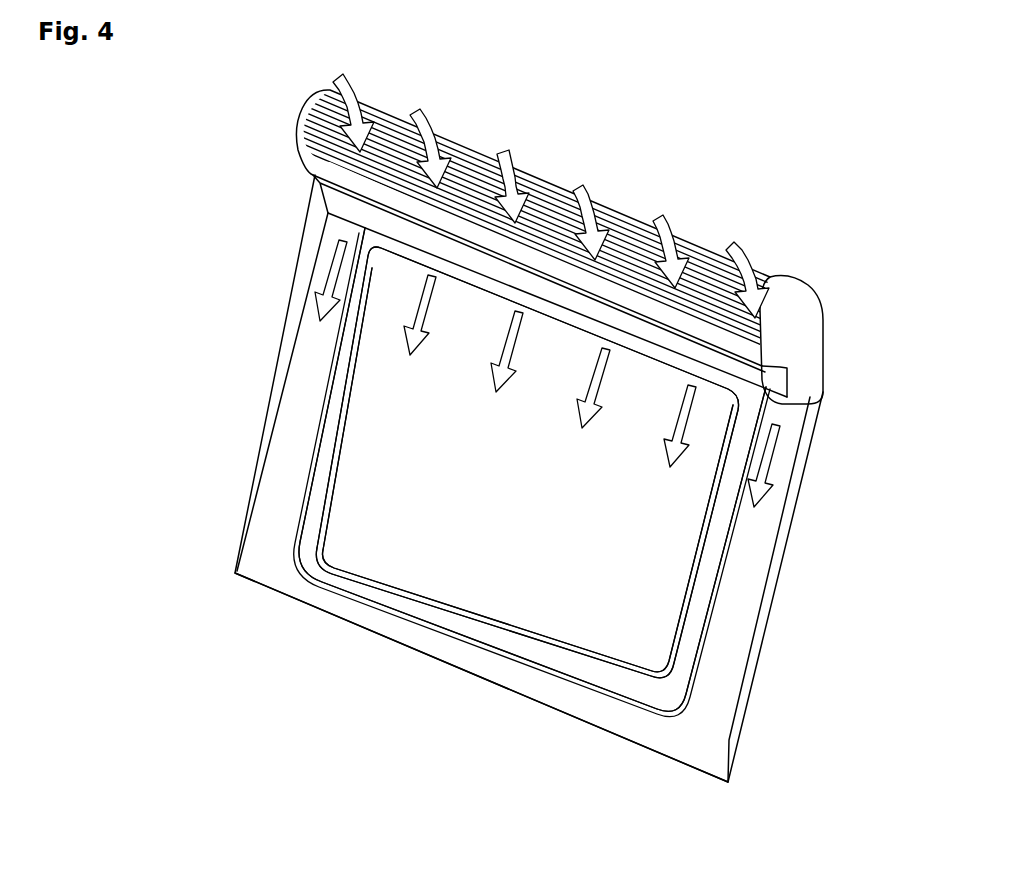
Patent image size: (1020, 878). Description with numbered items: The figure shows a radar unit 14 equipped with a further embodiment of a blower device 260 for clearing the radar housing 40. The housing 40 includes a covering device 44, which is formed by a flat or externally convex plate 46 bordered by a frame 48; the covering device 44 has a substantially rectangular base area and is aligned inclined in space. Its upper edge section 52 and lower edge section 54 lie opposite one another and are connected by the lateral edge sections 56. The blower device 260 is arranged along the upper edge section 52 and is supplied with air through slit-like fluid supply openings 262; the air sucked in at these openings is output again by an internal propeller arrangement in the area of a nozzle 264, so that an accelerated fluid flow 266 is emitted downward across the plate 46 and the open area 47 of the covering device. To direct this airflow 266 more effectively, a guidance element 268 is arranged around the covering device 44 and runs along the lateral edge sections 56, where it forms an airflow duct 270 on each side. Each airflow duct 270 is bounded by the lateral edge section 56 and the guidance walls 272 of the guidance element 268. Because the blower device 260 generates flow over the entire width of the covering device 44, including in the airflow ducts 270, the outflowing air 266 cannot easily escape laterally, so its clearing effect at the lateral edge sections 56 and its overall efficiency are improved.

The radar unit 14 is at (268, 261).
The radar housing 40 is at (748, 394).
The covering device 44 is at (640, 577).
The plate 46 is at (503, 602).
The open area 47 is at (384, 489).
The frame 48 is at (357, 587).
The upper edge section 52 is at (377, 240).
The lower edge section 54 is at (436, 618).
The lateral edge sections 56 is at (333, 407).
The blower device 260 is at (556, 239).
The fluid supply openings 262 is at (540, 193).
The nozzle 264 is at (642, 337).
The fluid flow 266 is at (653, 445).
The guidance element 268 is at (593, 713).
The airflow duct 270 is at (297, 445).
The guidance walls 272 is at (267, 405).